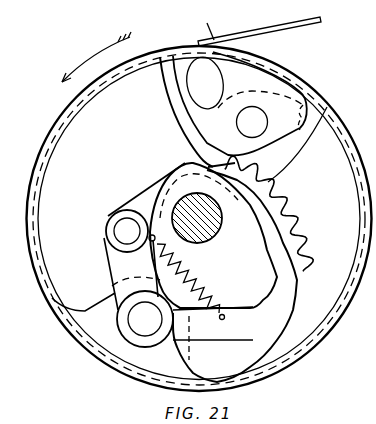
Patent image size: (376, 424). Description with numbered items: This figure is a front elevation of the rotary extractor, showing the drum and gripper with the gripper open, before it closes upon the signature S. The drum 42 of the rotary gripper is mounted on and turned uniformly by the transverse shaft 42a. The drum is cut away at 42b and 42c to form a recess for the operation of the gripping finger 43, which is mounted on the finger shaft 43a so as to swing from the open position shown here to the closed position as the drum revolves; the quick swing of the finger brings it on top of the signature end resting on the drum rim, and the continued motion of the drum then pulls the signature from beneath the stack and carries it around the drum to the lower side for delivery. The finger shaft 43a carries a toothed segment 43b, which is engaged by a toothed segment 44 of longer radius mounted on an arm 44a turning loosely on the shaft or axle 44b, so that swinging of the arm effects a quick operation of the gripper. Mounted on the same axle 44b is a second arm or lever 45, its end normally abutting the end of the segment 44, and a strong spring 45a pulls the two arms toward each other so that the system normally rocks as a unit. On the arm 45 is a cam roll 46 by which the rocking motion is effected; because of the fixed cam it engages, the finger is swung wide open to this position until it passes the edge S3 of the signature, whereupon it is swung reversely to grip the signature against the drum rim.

The signature S is at (259, 29).
The edge of the signature S3 is at (202, 24).
The drum 42 is at (257, 244).
The transverse shaft 42a is at (200, 243).
The cut-away portion of the drum 42b is at (166, 95).
The cut-away portion of the drum 42c is at (323, 133).
The gripping finger 43 is at (240, 103).
The finger shaft 43a is at (260, 114).
The toothed segment 43b is at (226, 150).
The toothed segment 44 is at (303, 247).
The arm 44a is at (227, 333).
The shaft or axle 44b is at (145, 319).
The second arm or lever 45 is at (155, 216).
The spring 45a is at (193, 271).
The cam roll 46 is at (106, 236).